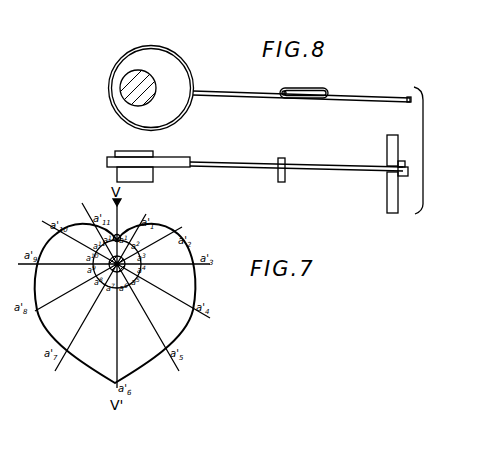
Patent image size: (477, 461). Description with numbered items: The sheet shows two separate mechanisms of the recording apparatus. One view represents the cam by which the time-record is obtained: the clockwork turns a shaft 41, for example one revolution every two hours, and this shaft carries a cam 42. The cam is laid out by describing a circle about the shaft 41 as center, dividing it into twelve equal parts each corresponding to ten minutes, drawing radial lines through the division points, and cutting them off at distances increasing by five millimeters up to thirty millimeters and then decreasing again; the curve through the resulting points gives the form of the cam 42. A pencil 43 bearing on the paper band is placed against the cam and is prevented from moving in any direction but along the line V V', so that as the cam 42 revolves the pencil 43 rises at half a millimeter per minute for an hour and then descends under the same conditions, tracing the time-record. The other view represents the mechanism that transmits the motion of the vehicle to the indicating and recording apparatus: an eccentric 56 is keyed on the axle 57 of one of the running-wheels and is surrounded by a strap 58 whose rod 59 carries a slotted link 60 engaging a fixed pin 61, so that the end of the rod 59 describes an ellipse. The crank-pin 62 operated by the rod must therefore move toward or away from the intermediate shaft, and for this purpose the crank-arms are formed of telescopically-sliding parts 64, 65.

In FIG. 7, the shaft 41 is at (115, 303).
In FIG. 7, the cam 42 is at (114, 293).
In FIG. 7, the pencil 43 is at (119, 235).
In FIG. 8, the eccentric 56 is at (151, 88).
In FIG. 8, the axle 57 is at (128, 88).
In FIG. 8, the strap 58 is at (186, 104).
In FIG. 8, the rod 59 is at (370, 100).
In FIG. 8, the slotted link 60 is at (314, 98).
In FIG. 8, the fixed pin 61 is at (284, 96).
In FIG. 8, the crank-pin 62 is at (408, 172).
In FIG. 8, the telescopically-sliding part 64 is at (405, 166).
In FIG. 8, the telescopically-sliding part 65 is at (404, 174).